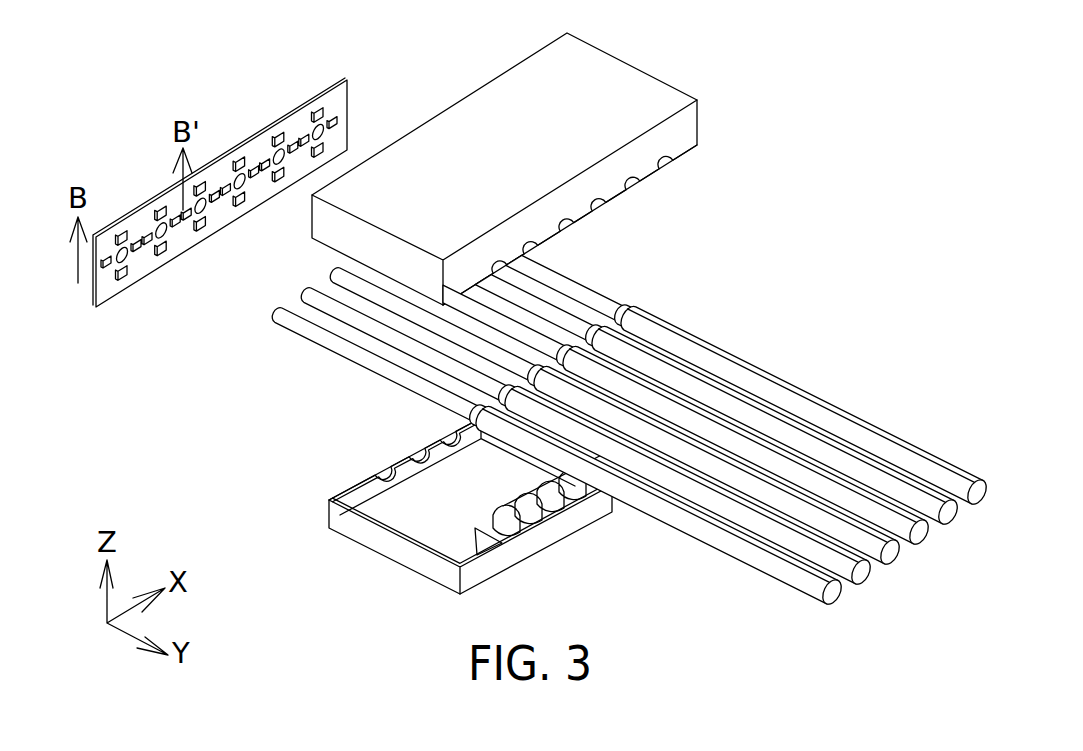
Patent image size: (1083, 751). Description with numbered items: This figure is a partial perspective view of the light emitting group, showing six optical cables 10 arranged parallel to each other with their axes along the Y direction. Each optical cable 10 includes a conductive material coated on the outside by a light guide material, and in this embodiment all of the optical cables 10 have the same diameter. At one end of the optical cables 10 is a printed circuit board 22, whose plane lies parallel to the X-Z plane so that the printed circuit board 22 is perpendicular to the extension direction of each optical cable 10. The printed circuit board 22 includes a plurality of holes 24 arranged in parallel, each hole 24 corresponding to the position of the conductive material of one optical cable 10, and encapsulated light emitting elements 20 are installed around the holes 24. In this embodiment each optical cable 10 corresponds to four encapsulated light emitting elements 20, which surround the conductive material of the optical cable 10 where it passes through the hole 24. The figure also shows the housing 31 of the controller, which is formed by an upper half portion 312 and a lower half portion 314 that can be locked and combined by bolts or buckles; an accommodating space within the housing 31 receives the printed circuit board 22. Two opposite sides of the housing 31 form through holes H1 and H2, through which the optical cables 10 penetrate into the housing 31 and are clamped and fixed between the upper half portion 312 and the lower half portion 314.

The optical cable 10 is at (788, 463).
The encapsulated light emitting element 20 is at (122, 234).
The printed circuit board 22 is at (220, 223).
The hole 24 is at (167, 233).
The housing 31 is at (422, 319).
The upper half portion 312 is at (327, 222).
The lower half portion 314 is at (411, 504).
The through hole H1 is at (503, 533).
The through hole H2 is at (378, 470).